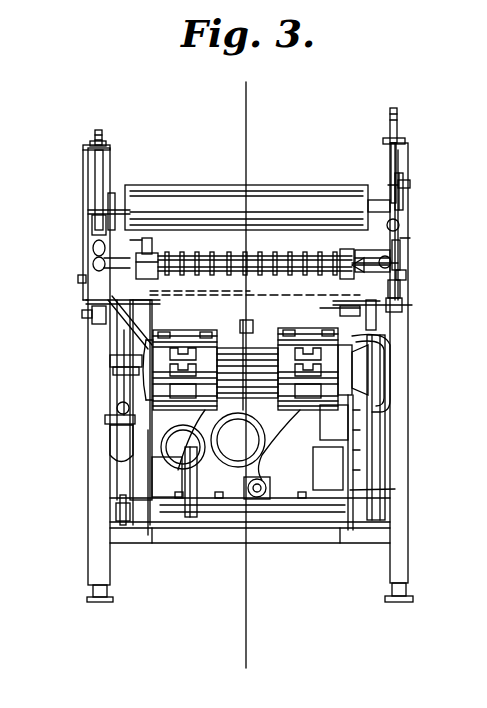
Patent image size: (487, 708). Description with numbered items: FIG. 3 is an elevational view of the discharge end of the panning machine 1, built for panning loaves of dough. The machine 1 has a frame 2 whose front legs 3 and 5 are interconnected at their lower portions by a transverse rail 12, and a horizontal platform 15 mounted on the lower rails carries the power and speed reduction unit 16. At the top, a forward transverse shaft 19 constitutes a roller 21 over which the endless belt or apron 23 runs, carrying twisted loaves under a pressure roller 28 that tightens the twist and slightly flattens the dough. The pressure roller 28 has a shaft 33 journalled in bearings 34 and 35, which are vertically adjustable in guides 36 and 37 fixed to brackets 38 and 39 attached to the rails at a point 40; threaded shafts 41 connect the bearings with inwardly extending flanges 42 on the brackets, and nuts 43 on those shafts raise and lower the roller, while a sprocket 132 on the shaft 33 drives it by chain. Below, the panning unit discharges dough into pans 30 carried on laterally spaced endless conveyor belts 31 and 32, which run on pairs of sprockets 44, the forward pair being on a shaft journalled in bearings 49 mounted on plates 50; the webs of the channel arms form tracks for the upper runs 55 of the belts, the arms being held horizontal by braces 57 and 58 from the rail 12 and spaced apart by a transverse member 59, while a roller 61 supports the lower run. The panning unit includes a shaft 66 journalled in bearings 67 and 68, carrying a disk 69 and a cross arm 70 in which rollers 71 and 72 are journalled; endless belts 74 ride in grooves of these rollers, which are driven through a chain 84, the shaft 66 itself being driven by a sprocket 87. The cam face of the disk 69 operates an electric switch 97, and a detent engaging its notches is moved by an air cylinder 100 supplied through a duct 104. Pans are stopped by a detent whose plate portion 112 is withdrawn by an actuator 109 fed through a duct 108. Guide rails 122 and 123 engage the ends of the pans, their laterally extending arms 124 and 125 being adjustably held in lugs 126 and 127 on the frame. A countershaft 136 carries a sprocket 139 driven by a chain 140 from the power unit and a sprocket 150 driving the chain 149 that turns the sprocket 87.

The machine 1 is at (400, 185).
The frame 2 is at (272, 90).
The leg 3 is at (409, 548).
The leg 5 is at (88, 553).
The transverse rail 12 is at (316, 530).
The horizontal platform 15 is at (222, 525).
The power and speed reduction unit 16 is at (262, 525).
The transverse shaft 19 is at (388, 256).
The roller 21 is at (358, 258).
The endless belt or apron 23 is at (397, 200).
The pressure roller 28 is at (260, 185).
The pans 30 is at (350, 306).
The conveyor belt 31 is at (118, 428).
The conveyor belt 32 is at (330, 406).
The shaft 33 is at (404, 143).
The bearing 34 is at (92, 226).
The bearing 35 is at (408, 238).
The guide 36 is at (88, 192).
The guide 37 is at (410, 183).
The bracket 38 is at (84, 168).
The bracket 39 is at (400, 246).
The attachment point 40 is at (78, 280).
The threaded shaft 41 is at (104, 159).
The inwardly extending flange 42 is at (106, 145).
The nut 43 is at (103, 138).
The sprockets 44 is at (392, 390).
The bearings 49 is at (356, 347).
The plates 50 is at (402, 308).
The upper runs 55 is at (200, 332).
The brace 57 is at (140, 456).
The brace 58 is at (350, 468).
The transverse member 59 is at (252, 328).
The roller 61 is at (118, 386).
The shaft 66 is at (232, 256).
The bearing 67 is at (93, 262).
The bearing 68 is at (404, 273).
The disk 69 is at (158, 256).
The cross arm 70 is at (346, 262).
The roller 71 is at (216, 252).
The roller 72 is at (296, 256).
The endless belts 74 is at (270, 256).
The chain 84 is at (142, 250).
The sprocket 87 is at (93, 247).
The electric switch 97 is at (104, 264).
The air cylinder 100 is at (88, 301).
The duct 104 is at (135, 340).
The duct 108 is at (272, 494).
The actuator 109 is at (305, 462).
The plate portion 112 is at (244, 330).
The guide rail 122 is at (152, 308).
The guide rail 123 is at (345, 305).
The laterally extending arm 124 is at (82, 314).
The laterally extending arm 125 is at (400, 289).
The lug 126 is at (95, 322).
The lug 127 is at (370, 320).
The sprocket 132 is at (90, 211).
The countershaft 136 is at (385, 506).
The sprocket 139 is at (386, 491).
The chain 140 is at (335, 528).
The chain 149 is at (126, 521).
The sprocket 150 is at (116, 514).